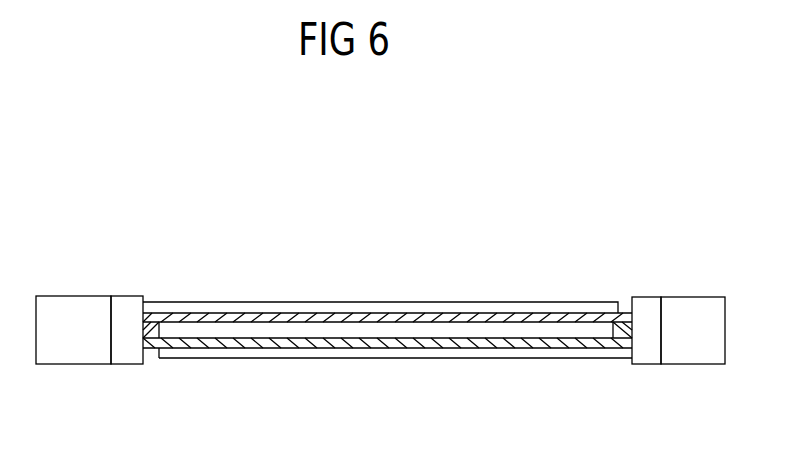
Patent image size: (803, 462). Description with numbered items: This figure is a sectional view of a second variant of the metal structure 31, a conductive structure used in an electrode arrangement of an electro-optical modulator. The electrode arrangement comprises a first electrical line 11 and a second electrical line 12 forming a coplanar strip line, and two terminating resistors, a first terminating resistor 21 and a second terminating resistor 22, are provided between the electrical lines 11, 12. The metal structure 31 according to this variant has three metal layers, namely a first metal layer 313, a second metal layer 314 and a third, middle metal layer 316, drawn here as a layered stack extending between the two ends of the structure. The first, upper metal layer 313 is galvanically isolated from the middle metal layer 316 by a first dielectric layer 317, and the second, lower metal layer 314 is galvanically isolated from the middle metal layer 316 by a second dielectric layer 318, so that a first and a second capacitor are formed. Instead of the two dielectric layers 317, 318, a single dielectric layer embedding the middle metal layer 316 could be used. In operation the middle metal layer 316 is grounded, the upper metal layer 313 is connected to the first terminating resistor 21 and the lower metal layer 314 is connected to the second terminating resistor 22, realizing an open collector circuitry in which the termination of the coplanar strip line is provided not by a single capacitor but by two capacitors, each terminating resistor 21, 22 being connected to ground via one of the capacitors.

The first electrical line 11 is at (79, 332).
The first terminating resistor 21 is at (125, 304).
The second electrical line 12 is at (690, 338).
The second terminating resistor 22 is at (641, 308).
The metal structure 31 is at (240, 250).
The first metal layer 313 is at (296, 301).
The second metal layer 314 is at (358, 358).
The third metal layer 316 is at (412, 331).
The first dielectric layer 317 is at (625, 323).
The second dielectric layer 318 is at (150, 360).